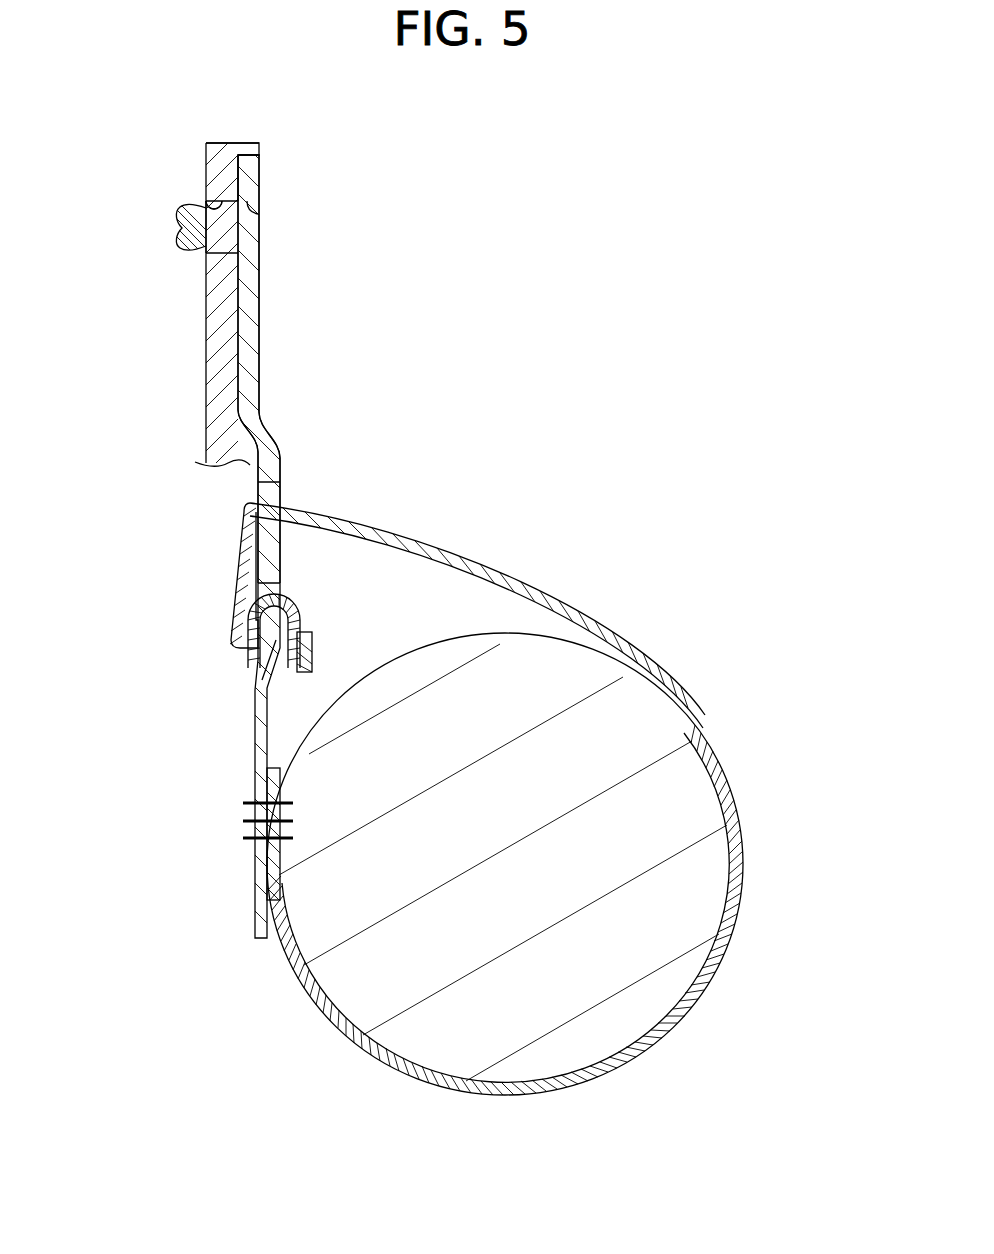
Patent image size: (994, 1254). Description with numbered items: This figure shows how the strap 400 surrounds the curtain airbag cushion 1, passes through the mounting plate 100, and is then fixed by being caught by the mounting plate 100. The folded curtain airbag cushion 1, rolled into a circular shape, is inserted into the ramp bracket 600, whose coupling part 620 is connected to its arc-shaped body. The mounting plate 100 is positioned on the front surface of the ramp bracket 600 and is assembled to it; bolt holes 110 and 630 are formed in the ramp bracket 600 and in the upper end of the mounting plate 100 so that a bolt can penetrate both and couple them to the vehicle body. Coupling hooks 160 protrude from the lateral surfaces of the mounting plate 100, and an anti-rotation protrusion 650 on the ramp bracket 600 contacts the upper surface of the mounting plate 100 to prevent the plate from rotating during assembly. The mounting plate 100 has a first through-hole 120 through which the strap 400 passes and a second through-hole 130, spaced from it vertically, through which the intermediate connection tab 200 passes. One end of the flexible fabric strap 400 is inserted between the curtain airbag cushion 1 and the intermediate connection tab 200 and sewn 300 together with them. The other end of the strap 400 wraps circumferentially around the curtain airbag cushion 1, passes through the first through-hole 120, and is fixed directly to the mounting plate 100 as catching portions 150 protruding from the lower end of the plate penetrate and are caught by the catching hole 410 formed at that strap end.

The curtain airbag cushion 1 is at (712, 887).
The mounting plate 100 is at (238, 305).
The bolt hole 110 is at (262, 220).
The first through-hole 120 is at (272, 475).
The second through-hole 130 is at (275, 578).
The catching portion 150 is at (257, 712).
The coupling hook 160 is at (178, 230).
The intermediate connection tab 200 is at (267, 735).
The sewing 300 is at (252, 832).
The strap 400 is at (588, 606).
The catching hole 410 is at (257, 662).
The ramp bracket 600 is at (207, 440).
The coupling part 620 is at (206, 362).
The bolt hole 630 is at (208, 205).
The anti-rotation protrusion 650 is at (259, 147).